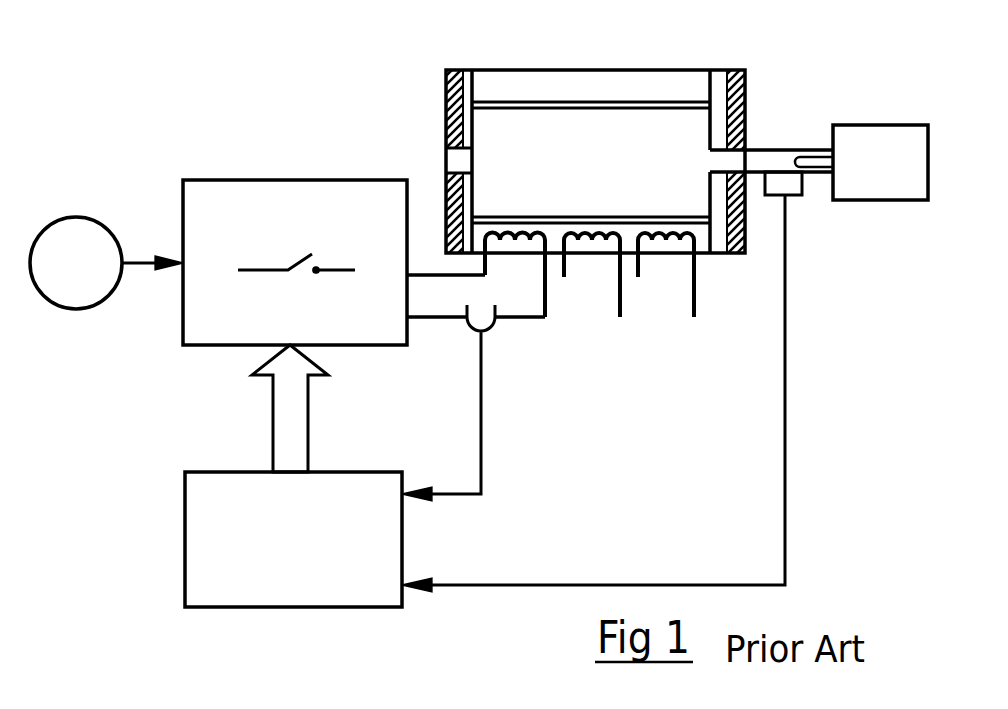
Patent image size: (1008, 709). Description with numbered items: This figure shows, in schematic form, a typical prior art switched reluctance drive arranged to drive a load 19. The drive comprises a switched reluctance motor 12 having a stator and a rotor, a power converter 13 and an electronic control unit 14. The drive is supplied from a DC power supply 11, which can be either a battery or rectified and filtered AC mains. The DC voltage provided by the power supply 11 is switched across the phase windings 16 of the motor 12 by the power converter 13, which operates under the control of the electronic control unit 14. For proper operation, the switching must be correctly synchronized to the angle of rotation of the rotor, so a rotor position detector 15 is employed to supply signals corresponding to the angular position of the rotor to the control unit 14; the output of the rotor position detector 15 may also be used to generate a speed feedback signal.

The DC power supply 11 is at (75, 210).
The switched reluctance motor 12 is at (555, 70).
The power converter 13 is at (233, 176).
The electronic control unit 14 is at (180, 493).
The rotor position detector 15 is at (782, 186).
The phase windings 16 is at (670, 225).
The load 19 is at (848, 133).